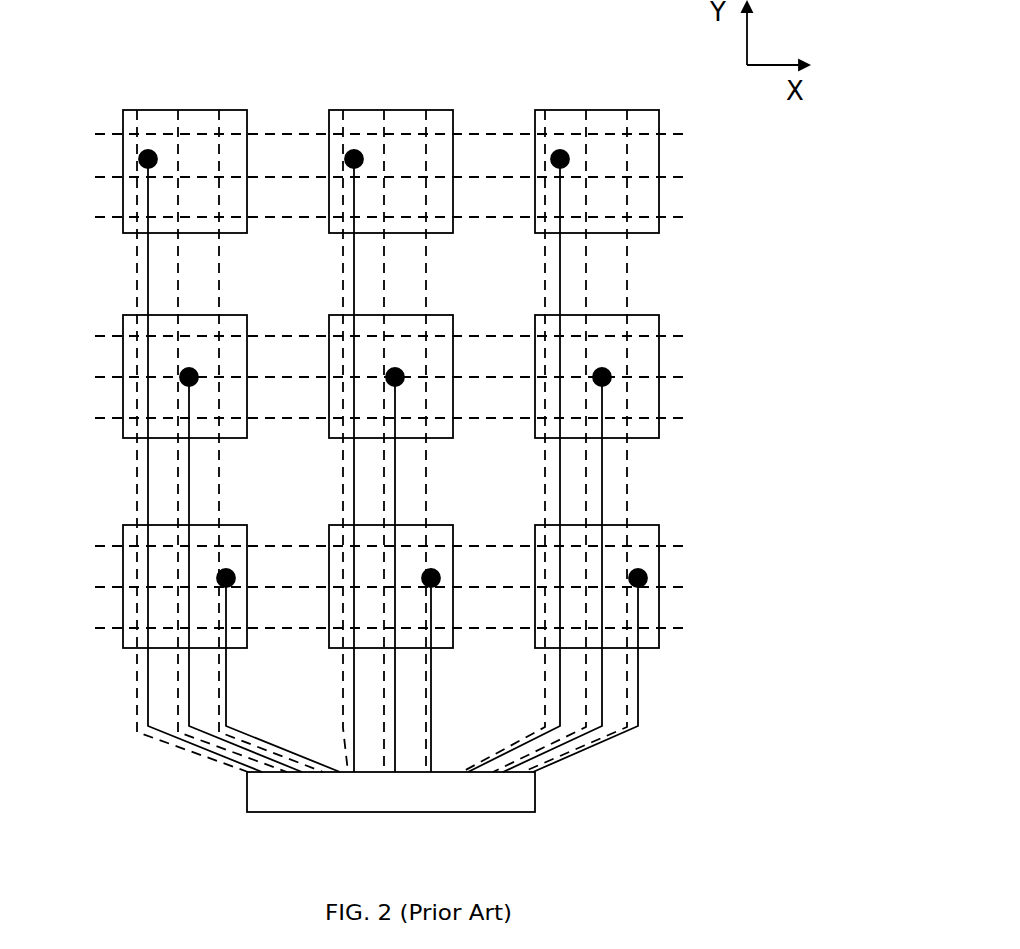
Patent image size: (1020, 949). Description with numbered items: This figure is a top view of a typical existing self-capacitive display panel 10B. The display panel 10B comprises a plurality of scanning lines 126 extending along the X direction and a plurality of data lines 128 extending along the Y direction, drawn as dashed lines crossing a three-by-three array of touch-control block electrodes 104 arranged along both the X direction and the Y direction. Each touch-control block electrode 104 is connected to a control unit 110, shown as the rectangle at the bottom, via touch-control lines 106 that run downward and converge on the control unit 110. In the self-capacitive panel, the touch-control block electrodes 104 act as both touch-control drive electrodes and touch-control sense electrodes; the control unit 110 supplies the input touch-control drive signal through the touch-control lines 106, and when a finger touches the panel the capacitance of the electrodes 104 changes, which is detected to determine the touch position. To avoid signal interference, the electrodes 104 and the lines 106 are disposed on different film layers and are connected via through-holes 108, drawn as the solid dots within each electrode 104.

The display panel 10B is at (411, 441).
The touch-control block electrode 104 is at (659, 160).
The touch-control line 106 is at (638, 705).
The through-hole 108 is at (602, 377).
The control unit 110 is at (515, 800).
The scanning line 126 is at (670, 417).
The data line 128 is at (628, 279).